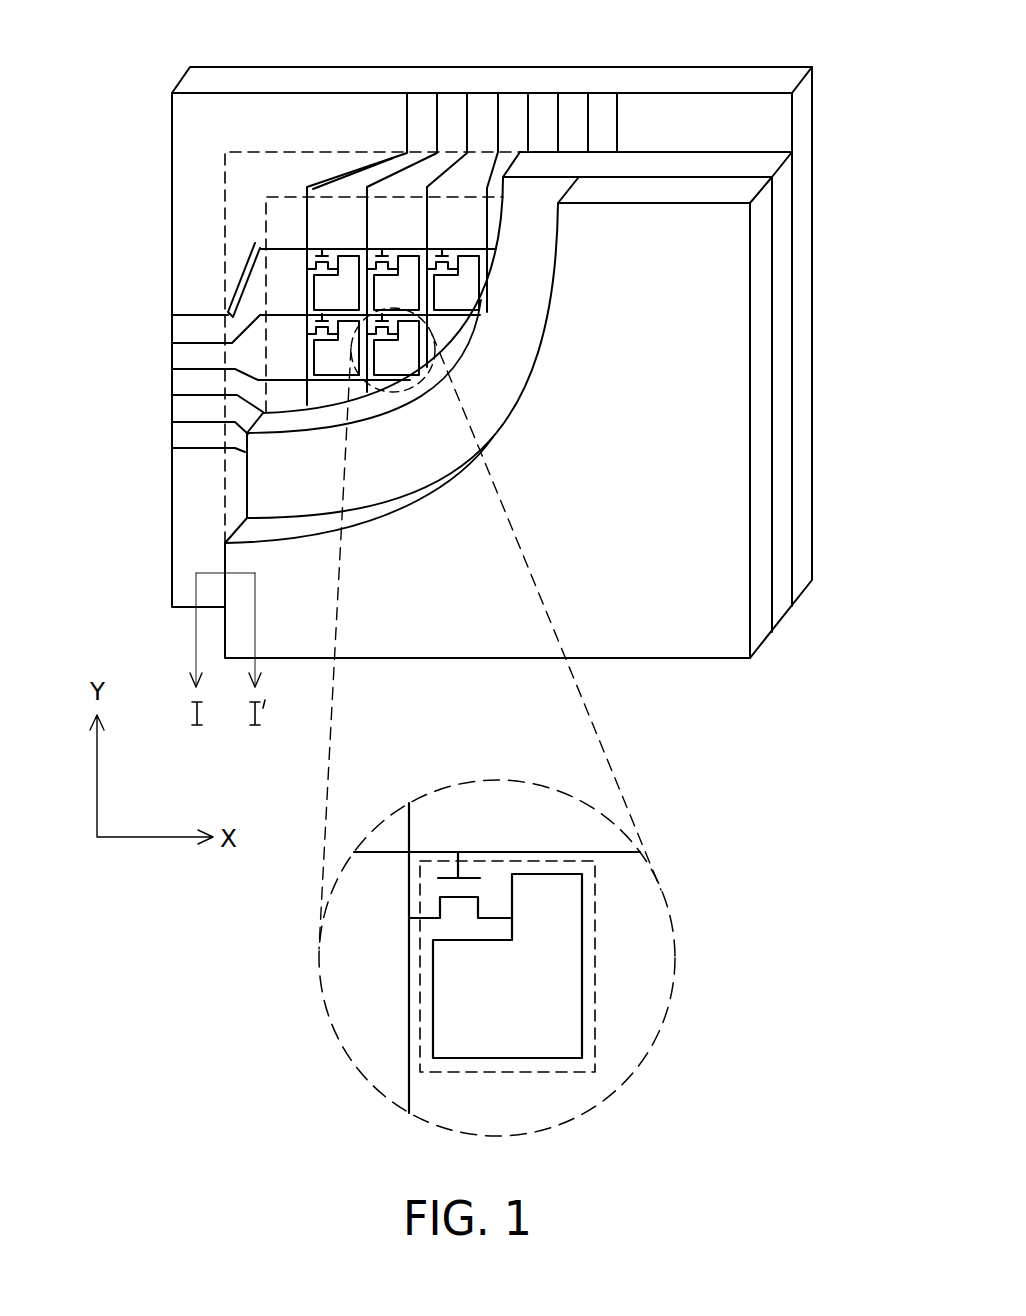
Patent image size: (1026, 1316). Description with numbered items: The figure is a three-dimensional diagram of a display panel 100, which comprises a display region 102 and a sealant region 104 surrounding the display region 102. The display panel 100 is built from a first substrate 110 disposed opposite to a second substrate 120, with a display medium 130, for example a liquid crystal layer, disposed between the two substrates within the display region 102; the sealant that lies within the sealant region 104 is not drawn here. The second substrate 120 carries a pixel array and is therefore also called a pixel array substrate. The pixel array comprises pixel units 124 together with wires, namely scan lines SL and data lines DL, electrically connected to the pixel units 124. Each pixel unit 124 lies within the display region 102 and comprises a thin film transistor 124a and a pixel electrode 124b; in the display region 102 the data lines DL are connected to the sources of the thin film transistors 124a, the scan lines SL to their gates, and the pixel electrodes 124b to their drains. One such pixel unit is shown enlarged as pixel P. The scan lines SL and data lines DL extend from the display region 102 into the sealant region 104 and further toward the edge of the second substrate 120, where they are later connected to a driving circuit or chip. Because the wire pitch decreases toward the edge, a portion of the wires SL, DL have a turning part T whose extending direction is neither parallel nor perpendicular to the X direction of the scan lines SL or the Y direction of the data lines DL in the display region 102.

The display panel 100 is at (757, 720).
The display region 102 is at (289, 218).
The sealant region 104 is at (251, 201).
The first substrate 110 is at (762, 630).
The second substrate 120 is at (801, 583).
The display medium 130 is at (780, 607).
The pixel units 124 is at (597, 947).
The thin film transistor 124a is at (475, 859).
The pixel electrode 124b is at (582, 1028).
The scan lines SL is at (225, 259).
The data lines DL is at (397, 153).
The turning part T is at (346, 168).
The pixel P is at (320, 972).